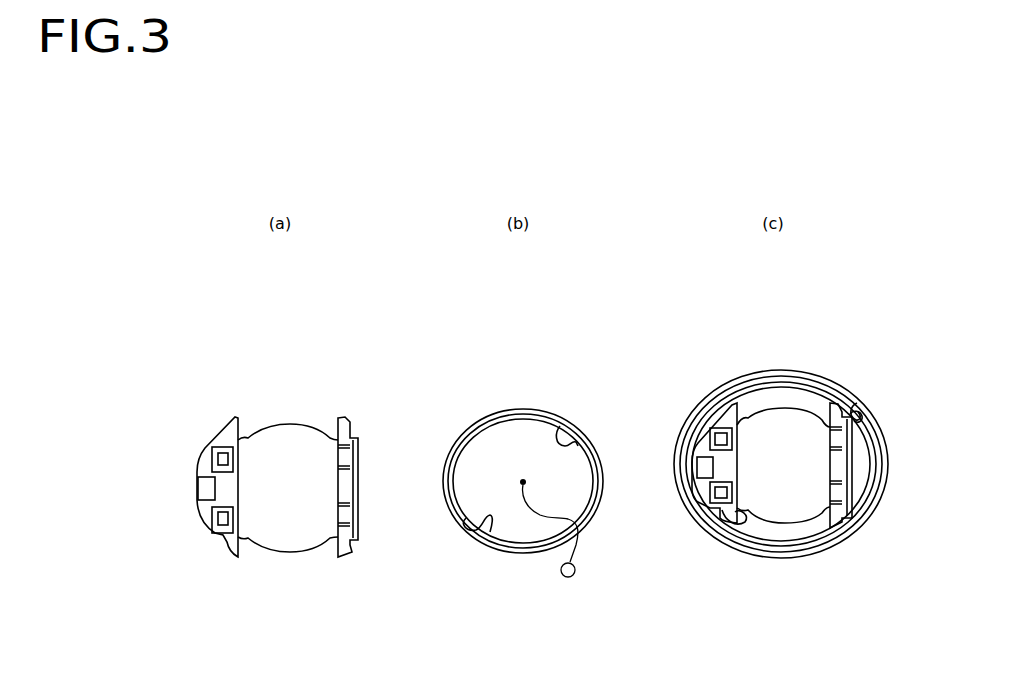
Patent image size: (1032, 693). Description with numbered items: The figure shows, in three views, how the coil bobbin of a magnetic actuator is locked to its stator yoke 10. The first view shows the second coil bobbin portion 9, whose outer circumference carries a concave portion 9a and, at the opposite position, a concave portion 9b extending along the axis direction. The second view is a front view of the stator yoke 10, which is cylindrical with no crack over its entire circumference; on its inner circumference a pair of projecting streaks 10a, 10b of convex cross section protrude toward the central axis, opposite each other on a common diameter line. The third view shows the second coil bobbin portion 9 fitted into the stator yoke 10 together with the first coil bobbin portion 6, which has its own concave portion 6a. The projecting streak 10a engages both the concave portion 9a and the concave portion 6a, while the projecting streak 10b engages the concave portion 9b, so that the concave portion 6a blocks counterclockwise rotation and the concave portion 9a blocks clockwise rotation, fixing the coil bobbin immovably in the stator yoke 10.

The first coil bobbin portion 6 is at (870, 527).
The concave portion 6a is at (857, 418).
The second coil bobbin portion 9 is at (289, 402).
The concave portion 9a is at (354, 434).
The concave portion 9b is at (224, 543).
The stator yoke 10 is at (528, 388).
The projecting streak 10a is at (559, 428).
The projecting streak 10b is at (490, 532).